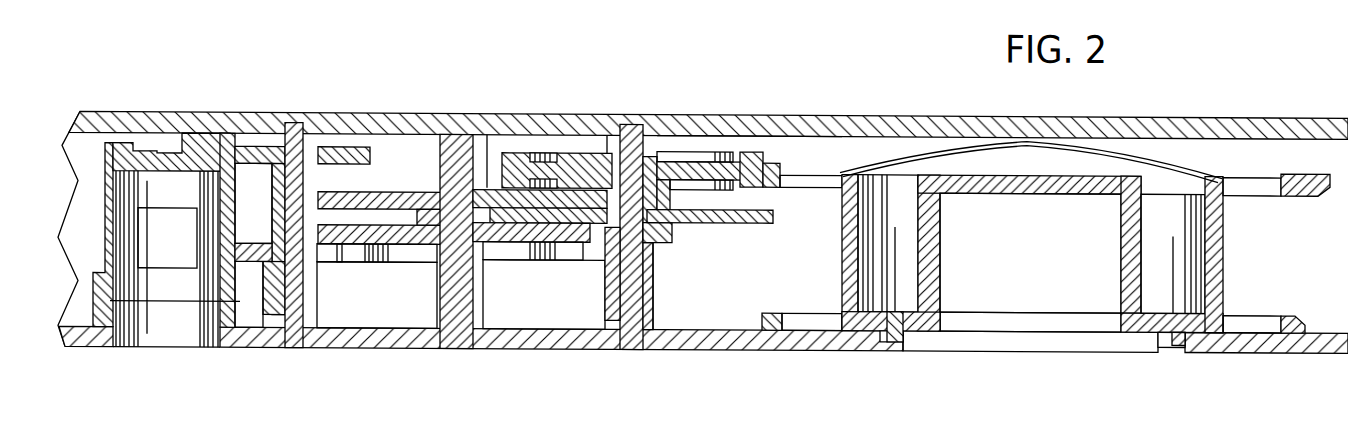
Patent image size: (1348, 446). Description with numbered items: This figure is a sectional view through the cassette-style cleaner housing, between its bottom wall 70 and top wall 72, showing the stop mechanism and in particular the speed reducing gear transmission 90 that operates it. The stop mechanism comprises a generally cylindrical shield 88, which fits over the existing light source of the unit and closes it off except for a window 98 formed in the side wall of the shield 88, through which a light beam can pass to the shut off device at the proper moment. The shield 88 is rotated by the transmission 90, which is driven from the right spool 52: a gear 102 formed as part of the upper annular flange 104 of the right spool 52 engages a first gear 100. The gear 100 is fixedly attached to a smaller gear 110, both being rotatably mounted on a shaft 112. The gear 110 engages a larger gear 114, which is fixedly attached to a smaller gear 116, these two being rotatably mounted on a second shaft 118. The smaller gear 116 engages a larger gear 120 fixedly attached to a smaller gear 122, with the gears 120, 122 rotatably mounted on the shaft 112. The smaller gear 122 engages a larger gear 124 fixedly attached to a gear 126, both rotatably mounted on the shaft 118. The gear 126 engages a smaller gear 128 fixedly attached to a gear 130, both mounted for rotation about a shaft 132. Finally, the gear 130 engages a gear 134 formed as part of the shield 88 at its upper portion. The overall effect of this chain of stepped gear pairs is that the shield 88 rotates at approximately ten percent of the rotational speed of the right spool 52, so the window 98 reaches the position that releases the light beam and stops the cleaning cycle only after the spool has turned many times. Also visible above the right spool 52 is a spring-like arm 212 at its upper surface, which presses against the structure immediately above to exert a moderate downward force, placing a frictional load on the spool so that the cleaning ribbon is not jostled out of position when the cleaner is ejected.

The right spool 52 is at (905, 320).
The bottom wall 70 is at (713, 344).
The top wall 72 is at (886, 127).
The cylindrical shield 88 is at (107, 205).
The speed reducing gear transmission 90 is at (688, 136).
The window 98 is at (169, 262).
The first gear 100 is at (716, 159).
The gear 102 is at (780, 164).
The upper annular flange 104 is at (812, 180).
The smaller gear 110 is at (671, 194).
The shaft 112 is at (628, 132).
The larger gear 114 is at (497, 186).
The smaller gear 116 is at (418, 216).
The second shaft 118 is at (463, 137).
The larger gear 120 is at (745, 220).
The smaller gear 122 is at (666, 237).
The larger gear 124 is at (532, 249).
The gear 126 is at (350, 250).
The smaller gear 128 is at (245, 262).
The gear 130 is at (350, 146).
The shaft 132 is at (297, 123).
The gear 134 is at (220, 144).
The spring-like arm 212 is at (1113, 152).